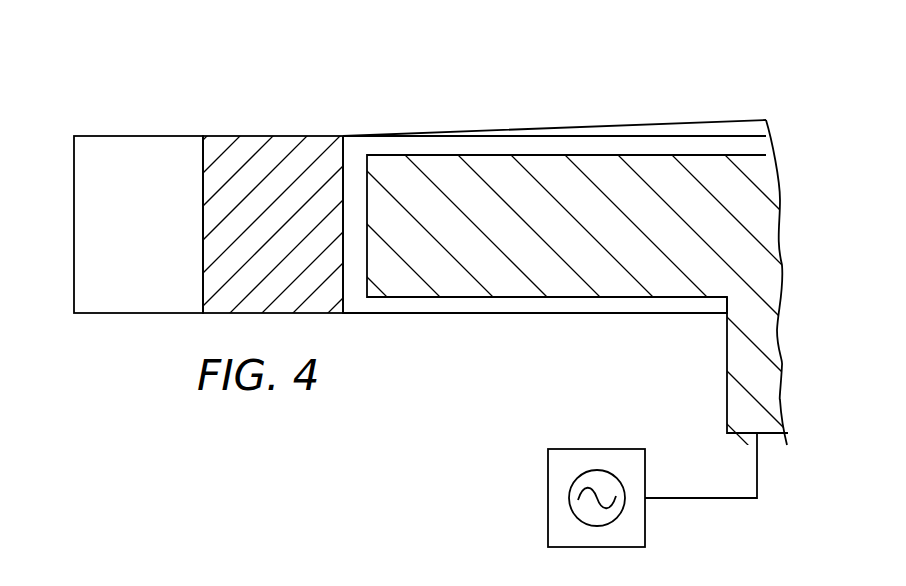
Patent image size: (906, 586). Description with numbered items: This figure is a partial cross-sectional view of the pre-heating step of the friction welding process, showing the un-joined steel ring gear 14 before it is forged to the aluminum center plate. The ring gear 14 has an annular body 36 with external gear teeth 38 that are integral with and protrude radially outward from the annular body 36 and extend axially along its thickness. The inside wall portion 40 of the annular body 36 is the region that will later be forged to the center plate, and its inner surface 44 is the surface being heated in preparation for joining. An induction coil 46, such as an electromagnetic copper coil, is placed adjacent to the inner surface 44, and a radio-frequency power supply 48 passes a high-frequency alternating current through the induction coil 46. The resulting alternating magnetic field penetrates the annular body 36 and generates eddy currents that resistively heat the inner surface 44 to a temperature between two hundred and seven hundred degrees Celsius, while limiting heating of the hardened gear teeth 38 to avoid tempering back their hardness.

The steel ring gear 14 is at (183, 100).
The annular body 36 is at (253, 165).
The external gear teeth 38 is at (102, 154).
The inside wall portion 40 is at (318, 240).
The inner surface 44 is at (344, 170).
The induction coil 46 is at (528, 188).
The radio-frequency power supply 48 is at (603, 462).